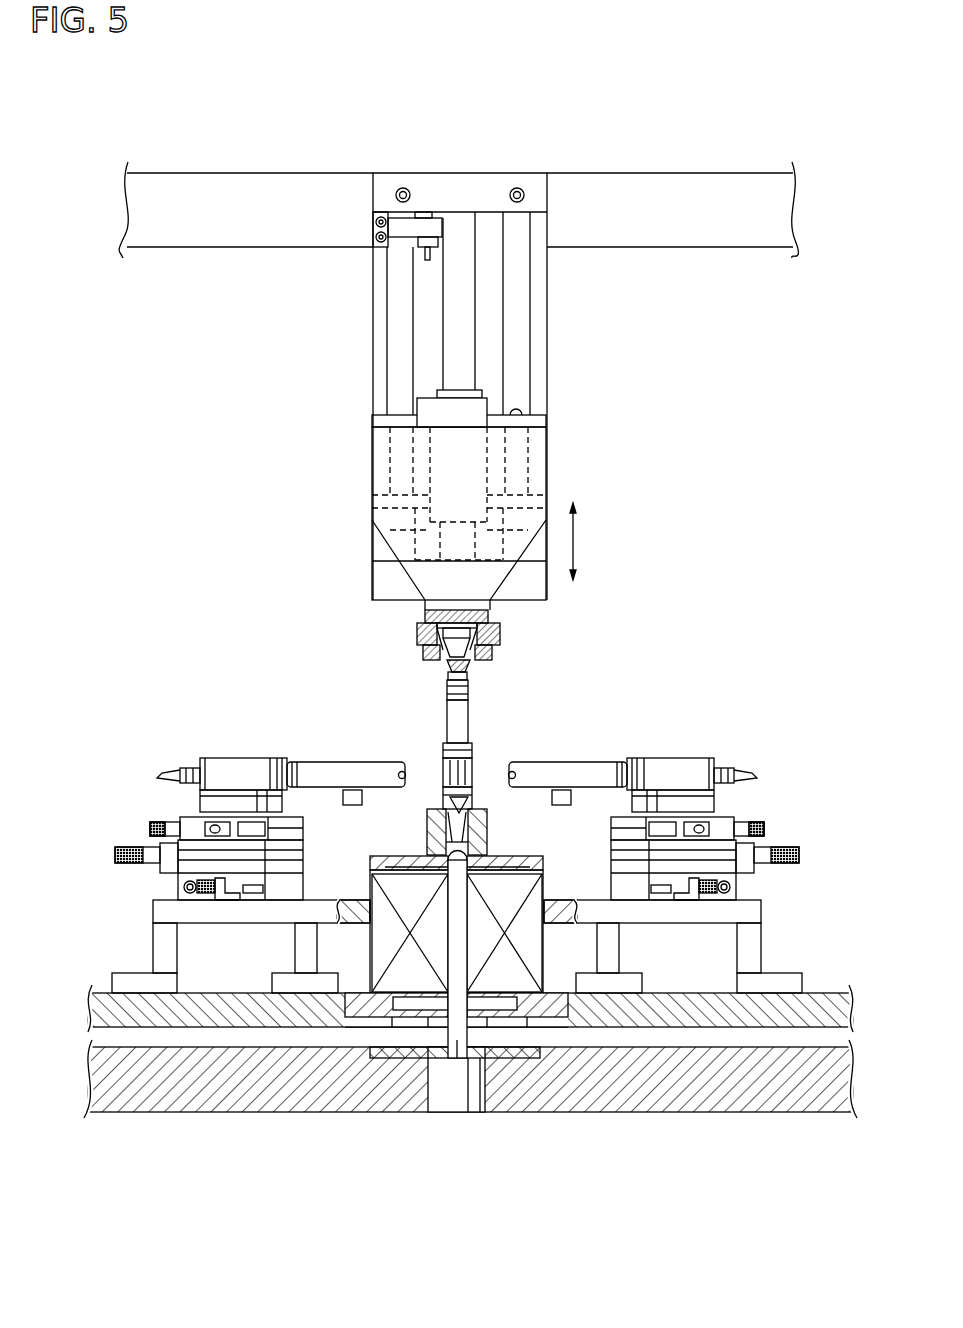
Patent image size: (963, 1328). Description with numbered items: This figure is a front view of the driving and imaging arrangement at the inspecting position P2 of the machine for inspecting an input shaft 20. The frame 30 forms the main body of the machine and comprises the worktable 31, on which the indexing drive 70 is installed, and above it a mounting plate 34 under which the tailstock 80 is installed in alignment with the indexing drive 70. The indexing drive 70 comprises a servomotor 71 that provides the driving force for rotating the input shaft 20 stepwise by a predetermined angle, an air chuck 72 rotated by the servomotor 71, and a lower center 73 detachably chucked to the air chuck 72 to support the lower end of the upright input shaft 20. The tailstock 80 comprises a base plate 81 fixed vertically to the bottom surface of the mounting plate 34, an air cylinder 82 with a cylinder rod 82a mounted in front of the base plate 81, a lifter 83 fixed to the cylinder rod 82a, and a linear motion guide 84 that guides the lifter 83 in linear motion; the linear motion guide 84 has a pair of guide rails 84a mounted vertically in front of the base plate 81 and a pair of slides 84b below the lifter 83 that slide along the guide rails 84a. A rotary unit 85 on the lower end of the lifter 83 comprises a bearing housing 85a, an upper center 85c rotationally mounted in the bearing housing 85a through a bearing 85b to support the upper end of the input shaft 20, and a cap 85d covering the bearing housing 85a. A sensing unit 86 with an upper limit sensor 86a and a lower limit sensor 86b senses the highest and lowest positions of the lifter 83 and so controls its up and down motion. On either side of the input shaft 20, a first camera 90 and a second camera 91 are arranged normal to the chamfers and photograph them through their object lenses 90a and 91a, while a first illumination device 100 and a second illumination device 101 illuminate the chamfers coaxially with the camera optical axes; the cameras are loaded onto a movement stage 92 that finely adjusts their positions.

The mounting plate 34 is at (263, 185).
The tailstock 80 is at (355, 352).
The base plate 81 is at (547, 318).
The air cylinder 82 is at (486, 192).
The cylinder rod 82a is at (467, 230).
The sensing unit 86 is at (383, 207).
The upper limit sensor 86a is at (402, 238).
The lower limit sensor 86b is at (383, 548).
The linear motion guide 84 is at (535, 382).
The guide rails 84a is at (525, 353).
The slides 84b is at (540, 420).
The lifter 83 is at (522, 473).
The rotary unit 85 is at (437, 625).
The bearing housing 85a is at (505, 614).
The bearing 85b is at (497, 637).
The upper center 85c is at (447, 672).
The cap 85d is at (423, 652).
The input shaft 20 is at (478, 680).
The inspecting position P2 is at (480, 711).
The first camera 90 is at (225, 765).
The object lens 90a is at (410, 772).
The second camera 91 is at (688, 765).
The object lens 91a is at (505, 773).
The first illumination device 100 is at (353, 790).
The second illumination device 101 is at (565, 790).
The movement stage 92 is at (160, 815).
The air chuck 72 is at (435, 835).
The lower center 73 is at (463, 835).
The indexing drive 70 is at (369, 958).
The servomotor 71 is at (406, 975).
The worktable 31 is at (262, 1012).
The frame 30 is at (188, 1112).